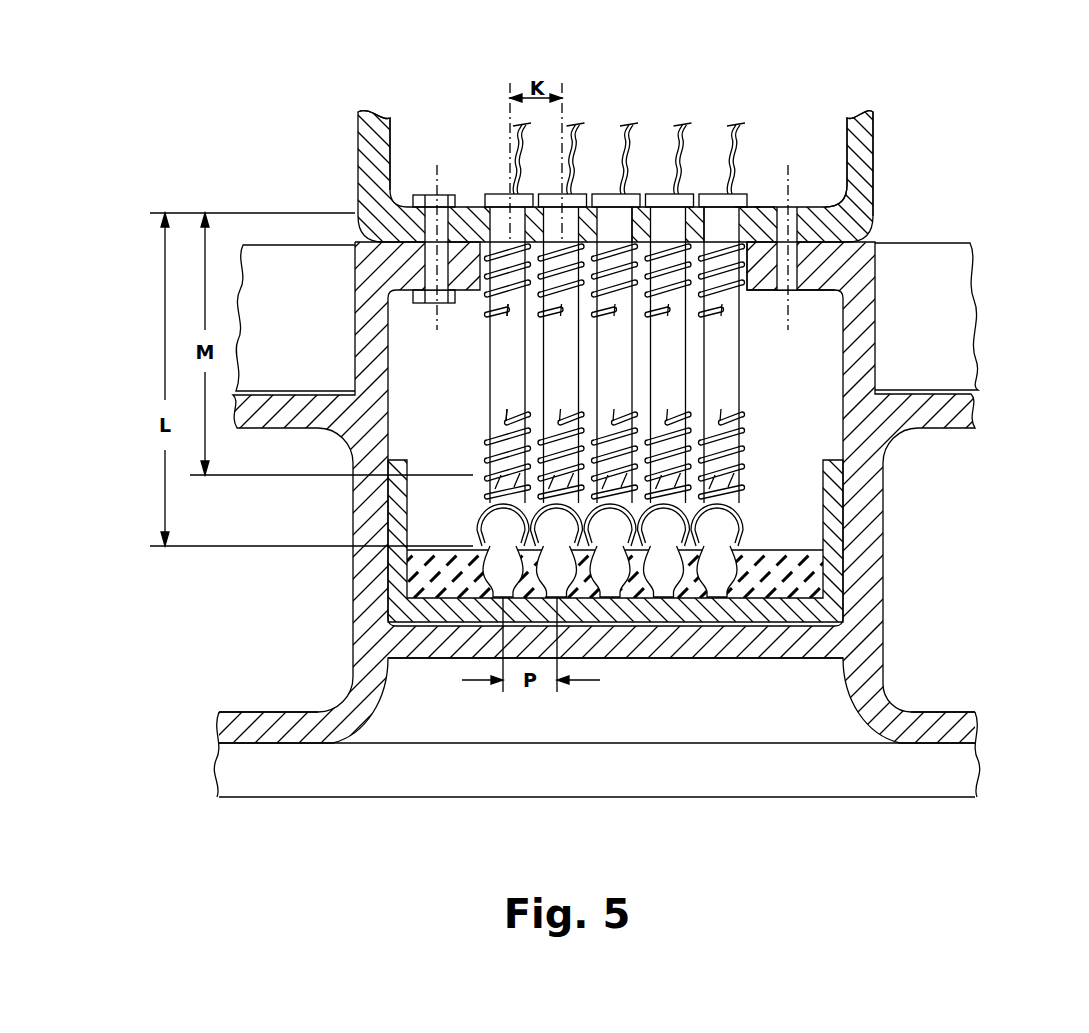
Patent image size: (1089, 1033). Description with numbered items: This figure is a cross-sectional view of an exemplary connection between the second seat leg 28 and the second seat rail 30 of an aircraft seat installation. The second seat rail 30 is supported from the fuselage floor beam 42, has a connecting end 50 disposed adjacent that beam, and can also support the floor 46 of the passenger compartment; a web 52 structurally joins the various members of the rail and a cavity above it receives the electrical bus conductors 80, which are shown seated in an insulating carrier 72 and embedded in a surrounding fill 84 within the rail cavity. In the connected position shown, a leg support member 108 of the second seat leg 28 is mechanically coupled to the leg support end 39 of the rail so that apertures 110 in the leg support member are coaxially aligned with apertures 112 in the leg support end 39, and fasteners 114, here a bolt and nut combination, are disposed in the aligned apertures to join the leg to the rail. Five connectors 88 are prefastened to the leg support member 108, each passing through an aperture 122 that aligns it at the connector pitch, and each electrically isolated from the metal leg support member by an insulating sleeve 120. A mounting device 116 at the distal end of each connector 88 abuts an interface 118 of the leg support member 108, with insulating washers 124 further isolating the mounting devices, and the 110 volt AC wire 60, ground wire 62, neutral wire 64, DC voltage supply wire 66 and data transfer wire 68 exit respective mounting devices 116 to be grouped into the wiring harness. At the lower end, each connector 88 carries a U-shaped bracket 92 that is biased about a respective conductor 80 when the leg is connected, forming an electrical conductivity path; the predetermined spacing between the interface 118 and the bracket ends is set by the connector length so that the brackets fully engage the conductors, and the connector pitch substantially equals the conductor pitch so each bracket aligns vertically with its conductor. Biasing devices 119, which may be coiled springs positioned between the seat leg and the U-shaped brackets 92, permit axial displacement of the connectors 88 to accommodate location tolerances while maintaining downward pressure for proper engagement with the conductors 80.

The second seat leg 28 is at (862, 143).
The second seat rail 30 is at (870, 593).
The leg support end 39 is at (763, 285).
The fuselage floor beam 42 is at (270, 777).
The floor 46 is at (292, 270).
The connecting end 50 is at (253, 722).
The web 52 is at (672, 648).
The 110 volt AC wire 60 is at (627, 143).
The ground wire 62 is at (520, 187).
The neutral wire 64 is at (576, 140).
The DC voltage supply wire 66 is at (733, 141).
The data transfer wire 68 is at (681, 141).
The insulating carrier tray 72 is at (828, 557).
The conductor 80 is at (722, 552).
The potting compound 84 is at (413, 573).
The connector 88 is at (722, 400).
The U-shaped bracket 92 is at (740, 507).
The leg support member 108 is at (473, 218).
The aperture 110 is at (797, 212).
The aperture 112 is at (793, 287).
The fastener 114 is at (428, 195).
The mounting device 116 is at (741, 208).
The interface 118 is at (825, 200).
The biasing device 119 is at (487, 427).
The insulating sleeve 120 is at (621, 222).
The aperture 122 is at (692, 222).
The washer 124 is at (762, 197).